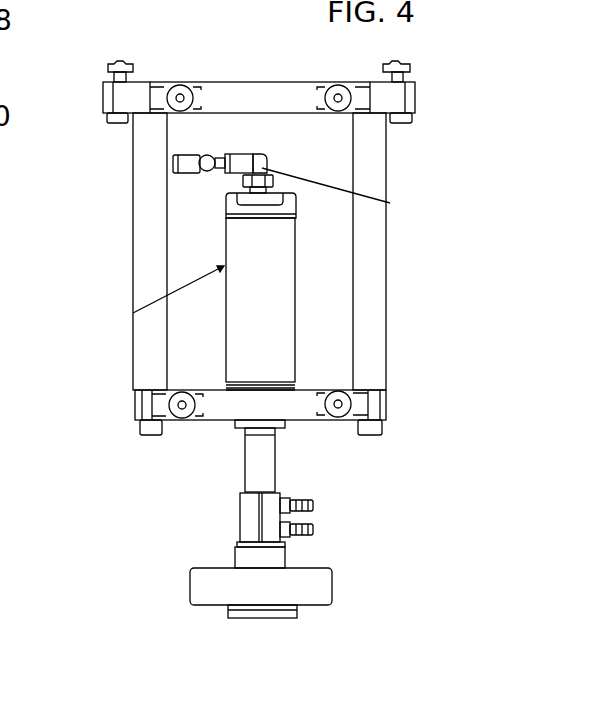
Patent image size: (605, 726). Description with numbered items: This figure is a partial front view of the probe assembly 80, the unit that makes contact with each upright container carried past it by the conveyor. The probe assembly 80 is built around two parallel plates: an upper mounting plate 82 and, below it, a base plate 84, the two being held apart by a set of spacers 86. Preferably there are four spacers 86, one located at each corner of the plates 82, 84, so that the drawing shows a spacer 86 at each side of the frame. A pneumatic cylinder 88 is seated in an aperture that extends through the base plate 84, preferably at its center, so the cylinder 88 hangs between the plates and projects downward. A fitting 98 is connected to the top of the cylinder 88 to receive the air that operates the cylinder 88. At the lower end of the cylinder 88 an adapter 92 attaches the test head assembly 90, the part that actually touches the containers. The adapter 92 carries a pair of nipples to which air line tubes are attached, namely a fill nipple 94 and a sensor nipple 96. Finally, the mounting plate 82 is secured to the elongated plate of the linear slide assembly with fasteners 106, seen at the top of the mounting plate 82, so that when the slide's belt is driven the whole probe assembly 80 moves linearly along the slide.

The probe assembly 80 is at (90, 388).
The mounting plate 82 is at (245, 95).
The base plate 84 is at (306, 420).
The spacers 86 is at (148, 261).
The pneumatic cylinder 88 is at (280, 318).
The test head assembly 90 is at (332, 575).
The adapter 92 is at (238, 518).
The fill nipple 94 is at (313, 505).
The sensor nipple 96 is at (313, 530).
The fitting 98 is at (174, 174).
The fasteners 106 is at (413, 63).